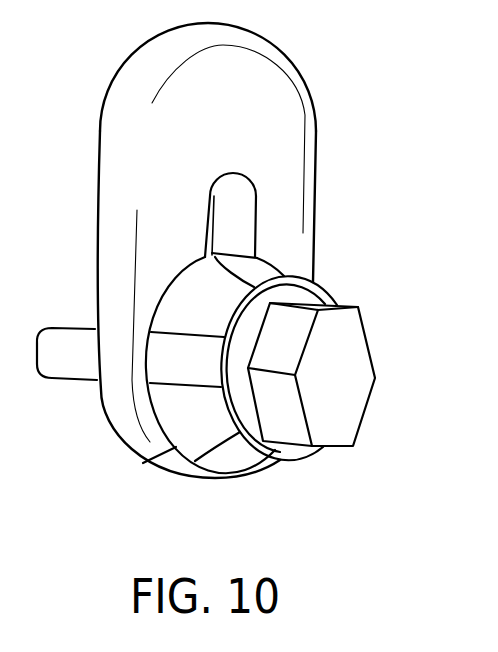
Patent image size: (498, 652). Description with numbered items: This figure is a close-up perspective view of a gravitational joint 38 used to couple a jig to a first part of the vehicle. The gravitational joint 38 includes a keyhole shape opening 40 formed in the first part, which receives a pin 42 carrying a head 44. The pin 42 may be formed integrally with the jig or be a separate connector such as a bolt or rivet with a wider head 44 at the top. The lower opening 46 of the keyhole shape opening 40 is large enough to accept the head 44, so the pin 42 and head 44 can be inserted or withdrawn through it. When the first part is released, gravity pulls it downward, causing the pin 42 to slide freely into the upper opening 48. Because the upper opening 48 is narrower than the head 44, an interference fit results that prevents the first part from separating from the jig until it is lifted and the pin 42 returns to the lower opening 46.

The gravitational joint 38 is at (363, 270).
The keyhole shape opening 40 is at (325, 295).
The pin 42 is at (72, 337).
The head 44 is at (293, 450).
The lower opening 46 is at (143, 463).
The upper opening 48 is at (242, 197).